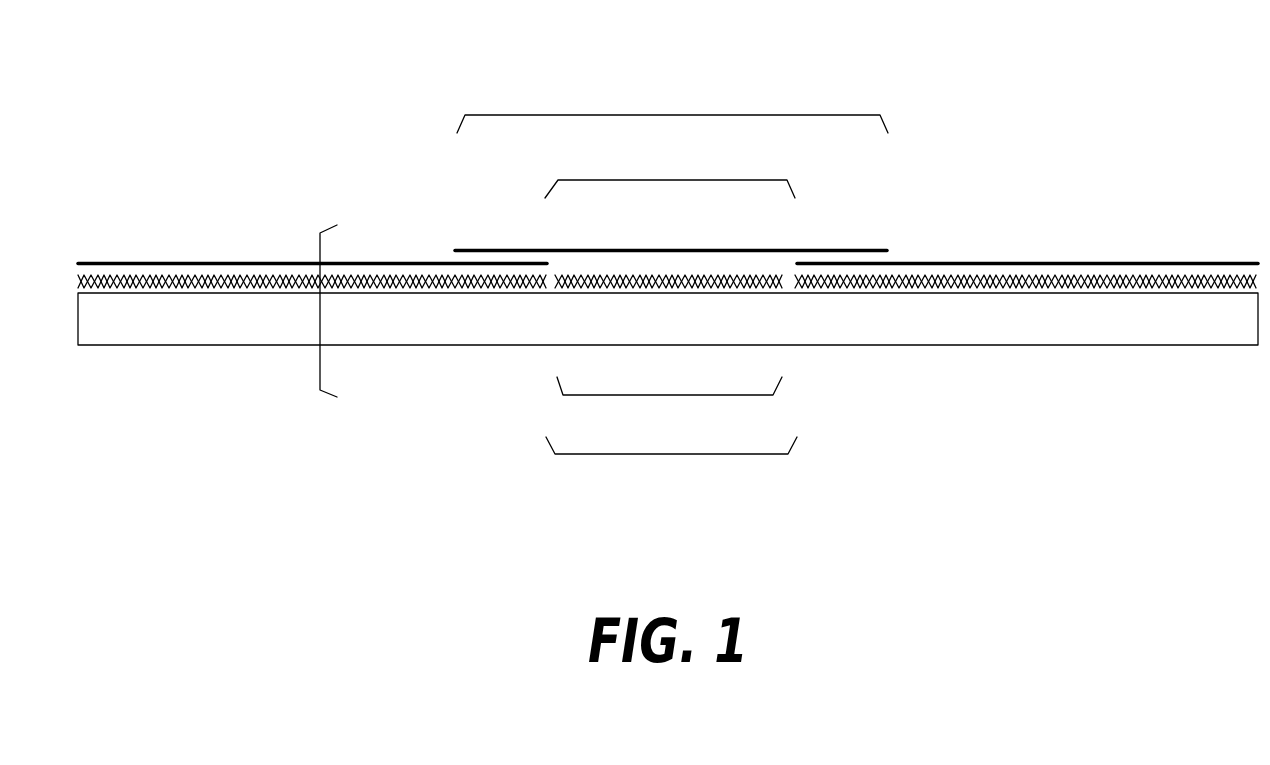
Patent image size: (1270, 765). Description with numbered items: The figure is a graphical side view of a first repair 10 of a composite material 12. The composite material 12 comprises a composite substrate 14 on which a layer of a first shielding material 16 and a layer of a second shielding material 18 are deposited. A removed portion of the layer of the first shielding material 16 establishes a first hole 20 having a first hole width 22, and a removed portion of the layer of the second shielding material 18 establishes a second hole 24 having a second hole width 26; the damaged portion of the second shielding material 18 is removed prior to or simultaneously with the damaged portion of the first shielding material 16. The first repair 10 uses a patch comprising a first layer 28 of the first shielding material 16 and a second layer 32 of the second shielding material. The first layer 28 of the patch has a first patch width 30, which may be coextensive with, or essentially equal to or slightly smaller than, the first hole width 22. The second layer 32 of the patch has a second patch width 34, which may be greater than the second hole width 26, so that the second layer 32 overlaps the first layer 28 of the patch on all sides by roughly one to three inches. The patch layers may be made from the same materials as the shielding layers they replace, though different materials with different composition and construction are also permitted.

The first repair 10 is at (857, 70).
The composite material 12 is at (320, 312).
The composite substrate 14 is at (837, 346).
The first shielding material 16 is at (922, 280).
The second shielding material 18 is at (1035, 261).
The first hole 20 is at (549, 276).
The first hole width 22 is at (670, 456).
The second hole 24 is at (575, 266).
The second hole width 26 is at (668, 180).
The first layer of the patch 28 is at (587, 288).
The first patch width 30 is at (670, 397).
The second layer of the patch 32 is at (838, 248).
The second patch width 34 is at (668, 113).